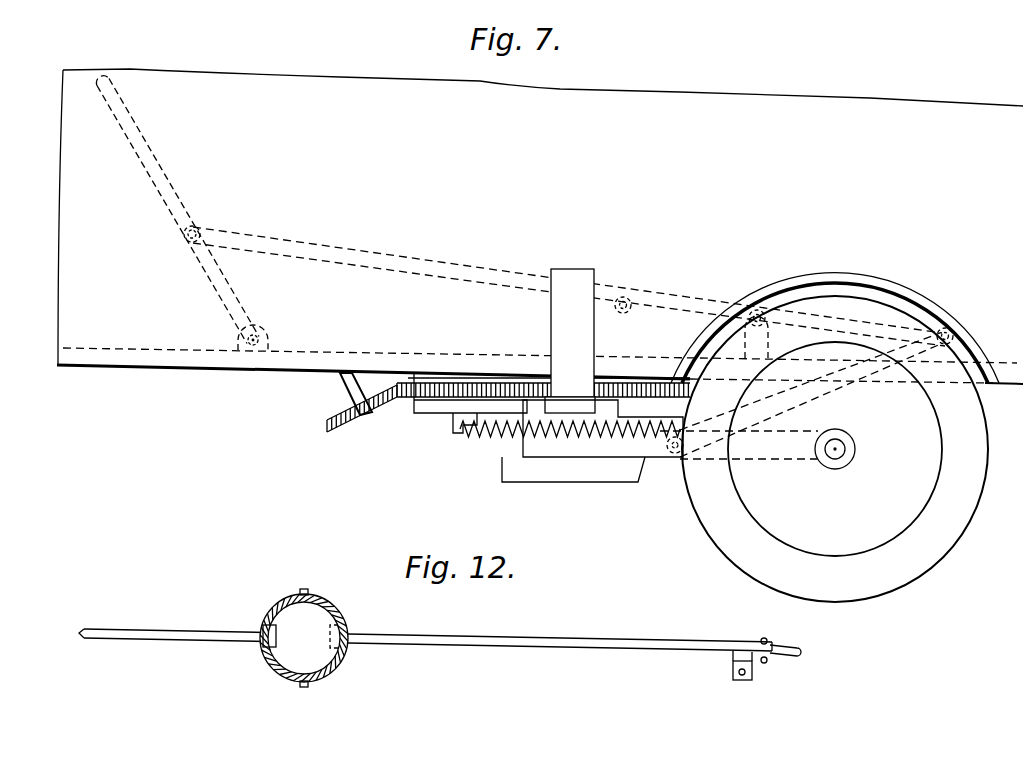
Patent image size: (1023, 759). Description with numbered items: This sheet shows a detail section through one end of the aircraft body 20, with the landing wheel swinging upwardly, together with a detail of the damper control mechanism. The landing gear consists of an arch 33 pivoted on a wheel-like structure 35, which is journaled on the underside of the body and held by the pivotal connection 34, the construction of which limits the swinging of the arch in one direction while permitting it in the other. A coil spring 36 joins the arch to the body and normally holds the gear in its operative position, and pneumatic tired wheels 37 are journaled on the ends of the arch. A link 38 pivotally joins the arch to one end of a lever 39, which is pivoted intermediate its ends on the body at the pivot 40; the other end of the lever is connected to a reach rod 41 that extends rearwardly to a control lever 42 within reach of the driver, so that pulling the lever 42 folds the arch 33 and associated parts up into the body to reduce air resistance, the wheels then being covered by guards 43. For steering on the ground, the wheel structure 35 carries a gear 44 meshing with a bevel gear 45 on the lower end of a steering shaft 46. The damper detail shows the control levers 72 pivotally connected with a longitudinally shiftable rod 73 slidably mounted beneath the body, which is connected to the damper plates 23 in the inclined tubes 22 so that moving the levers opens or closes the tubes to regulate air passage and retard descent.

In FIG. 7, the body 20 is at (177, 328).
In FIG. 12, the tubes 22 is at (268, 670).
In FIG. 12, the damper plates 23 is at (292, 620).
In FIG. 7, the arch 33 is at (580, 450).
In FIG. 7, the pivotal connection 34 is at (565, 405).
In FIG. 7, the wheel-like structure 35 is at (450, 405).
In FIG. 7, the coil spring 36 is at (500, 440).
In FIG. 7, the pneumatic tired wheels 37 is at (948, 532).
In FIG. 7, the link 38 is at (823, 383).
In FIG. 7, the lever 39 is at (690, 310).
In FIG. 7, the pivot 40 is at (775, 298).
In FIG. 7, the reach rod 41 is at (305, 250).
In FIG. 7, the control lever 42 is at (142, 172).
In FIG. 7, the guards 43 is at (923, 302).
In FIG. 7, the gear 44 is at (430, 398).
In FIG. 7, the bevel gear 45 is at (350, 422).
In FIG. 7, the steering shaft 46 is at (345, 393).
In FIG. 12, the control levers 72 is at (797, 657).
In FIG. 12, the longitudinally shiftable rod 73 is at (600, 648).